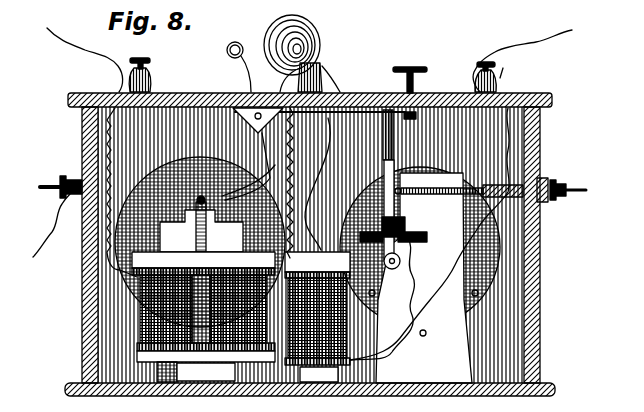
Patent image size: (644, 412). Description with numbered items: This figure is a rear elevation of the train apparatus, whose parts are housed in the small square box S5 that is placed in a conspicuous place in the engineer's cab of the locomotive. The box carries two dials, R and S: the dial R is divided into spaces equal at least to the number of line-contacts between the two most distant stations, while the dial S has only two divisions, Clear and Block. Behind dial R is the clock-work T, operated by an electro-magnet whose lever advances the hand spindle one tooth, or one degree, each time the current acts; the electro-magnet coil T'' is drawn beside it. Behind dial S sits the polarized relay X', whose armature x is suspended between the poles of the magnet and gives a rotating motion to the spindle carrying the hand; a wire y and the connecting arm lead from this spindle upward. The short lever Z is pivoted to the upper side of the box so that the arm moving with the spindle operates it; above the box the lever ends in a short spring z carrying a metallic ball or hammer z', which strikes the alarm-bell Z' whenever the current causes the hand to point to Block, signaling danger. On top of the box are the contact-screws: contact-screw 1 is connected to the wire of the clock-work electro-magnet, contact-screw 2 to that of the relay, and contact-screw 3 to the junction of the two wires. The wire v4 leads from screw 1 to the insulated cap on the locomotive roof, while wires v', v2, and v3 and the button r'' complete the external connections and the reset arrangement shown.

The wire v' is at (85, 59).
The contact-screw 2 is at (143, 75).
The metallic ball or hammer z' is at (239, 61).
The short spring z is at (257, 78).
The alarm-bell Z' is at (302, 52).
The contact-screw 3 is at (326, 62).
The knob r'' is at (410, 72).
The wire v4 is at (522, 56).
The contact-screw 1 is at (508, 69).
The adjusting screw v2 is at (313, 177).
The wire v3 is at (51, 225).
The dial S is at (200, 242).
The wire y is at (248, 191).
The armature x is at (201, 232).
The polarized relay X' is at (203, 317).
The electromagnet coil T'' is at (317, 317).
The clock-work T is at (414, 278).
The dial R is at (392, 189).
The box S5 is at (328, 184).
The short lever Z is at (315, 154).